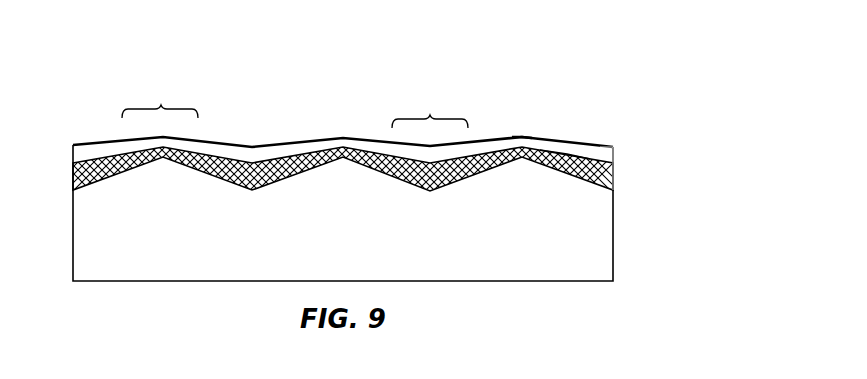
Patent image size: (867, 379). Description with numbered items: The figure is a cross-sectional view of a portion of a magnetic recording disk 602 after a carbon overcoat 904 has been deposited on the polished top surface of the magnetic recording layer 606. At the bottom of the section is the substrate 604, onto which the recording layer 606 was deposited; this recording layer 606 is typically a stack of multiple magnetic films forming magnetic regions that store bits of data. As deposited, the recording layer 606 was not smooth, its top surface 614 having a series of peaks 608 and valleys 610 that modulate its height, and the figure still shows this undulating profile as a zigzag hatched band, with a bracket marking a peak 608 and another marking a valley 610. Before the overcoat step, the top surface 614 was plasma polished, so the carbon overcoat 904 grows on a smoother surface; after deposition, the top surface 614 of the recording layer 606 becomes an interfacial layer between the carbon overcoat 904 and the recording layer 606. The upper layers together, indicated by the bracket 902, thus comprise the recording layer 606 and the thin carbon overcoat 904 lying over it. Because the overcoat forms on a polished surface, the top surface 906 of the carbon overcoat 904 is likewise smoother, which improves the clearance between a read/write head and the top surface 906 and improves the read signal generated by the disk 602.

The disk 602 is at (374, 145).
The substrate 604 is at (597, 240).
The magnetic recording layer 606 is at (613, 180).
The peaks 608 is at (160, 99).
The valleys 610 is at (430, 109).
The top surface 614 is at (567, 149).
The coating stack 902 is at (664, 142).
The carbon overcoat 904 is at (603, 153).
The top surface of carbon overcoat 906 is at (530, 134).